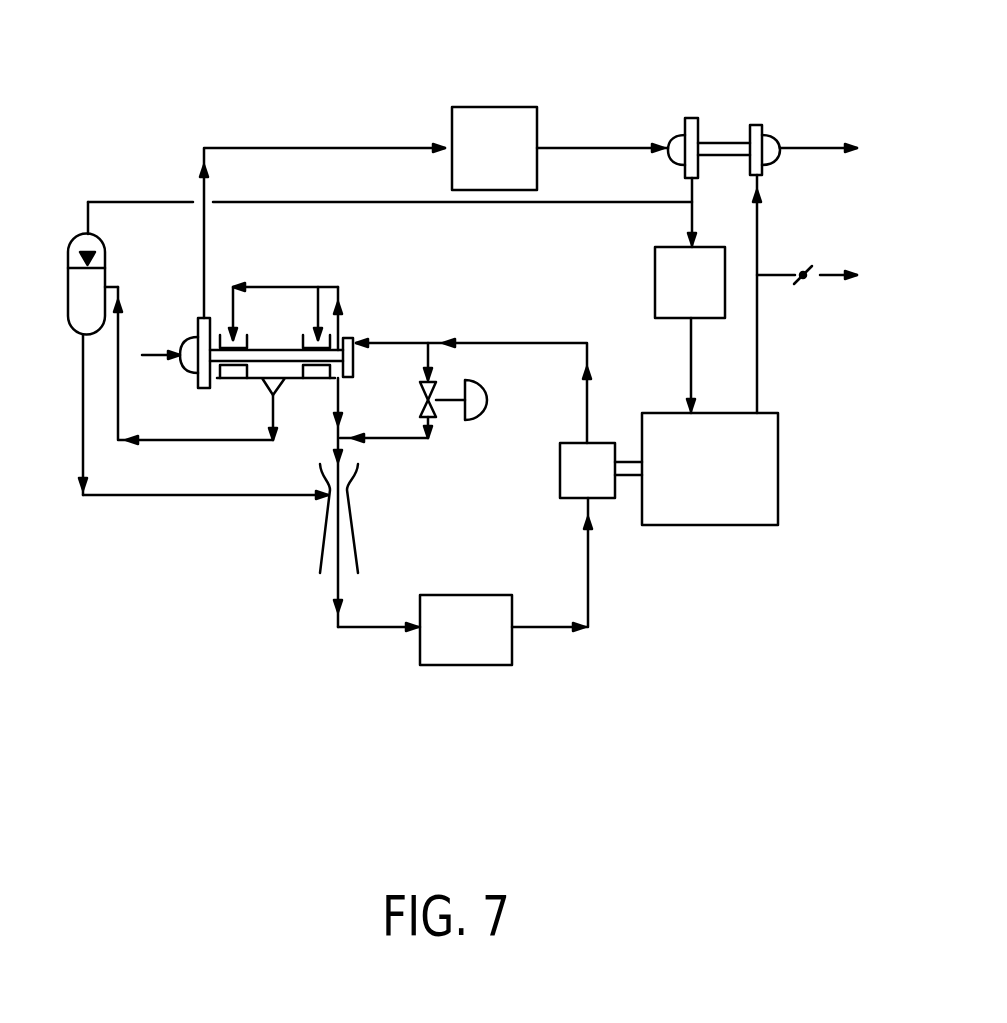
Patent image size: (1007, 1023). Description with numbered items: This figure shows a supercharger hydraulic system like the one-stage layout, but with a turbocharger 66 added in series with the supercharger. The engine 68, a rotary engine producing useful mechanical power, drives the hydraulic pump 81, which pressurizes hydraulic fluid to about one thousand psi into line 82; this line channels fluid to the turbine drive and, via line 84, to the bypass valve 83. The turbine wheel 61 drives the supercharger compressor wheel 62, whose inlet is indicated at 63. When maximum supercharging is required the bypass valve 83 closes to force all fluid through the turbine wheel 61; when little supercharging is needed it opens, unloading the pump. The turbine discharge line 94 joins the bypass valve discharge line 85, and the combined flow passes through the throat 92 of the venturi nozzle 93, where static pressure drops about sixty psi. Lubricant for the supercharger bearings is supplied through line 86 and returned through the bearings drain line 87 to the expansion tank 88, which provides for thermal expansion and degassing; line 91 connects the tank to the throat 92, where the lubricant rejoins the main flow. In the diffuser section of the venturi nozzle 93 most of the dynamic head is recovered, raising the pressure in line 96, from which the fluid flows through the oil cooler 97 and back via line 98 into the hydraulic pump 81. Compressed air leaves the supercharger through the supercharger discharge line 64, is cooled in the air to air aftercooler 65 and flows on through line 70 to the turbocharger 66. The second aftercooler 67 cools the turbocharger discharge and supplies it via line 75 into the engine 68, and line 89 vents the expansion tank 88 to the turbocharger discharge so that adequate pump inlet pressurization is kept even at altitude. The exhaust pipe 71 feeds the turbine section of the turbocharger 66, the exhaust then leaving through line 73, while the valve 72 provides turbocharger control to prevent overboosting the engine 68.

The turbine wheel 61 is at (352, 340).
The supercharger compressor wheel 62 is at (187, 337).
The compressor inlet line 63 is at (163, 355).
The supercharger discharge line 64 is at (205, 253).
The air to air aftercooler 65 is at (488, 130).
The turbocharger 66 is at (717, 148).
The second aftercooler 67 is at (660, 287).
The engine 68 is at (748, 502).
The line 70 is at (582, 148).
The exhaust pipe 71 is at (757, 325).
The valve 72 is at (808, 263).
The line 73 is at (802, 148).
The line 75 is at (683, 337).
The hydraulic pump 81 is at (558, 472).
The line 82 is at (517, 341).
The bypass valve 83 is at (433, 407).
The line 84 is at (428, 353).
The bypass valve discharge line 85 is at (390, 438).
The line 86 is at (297, 287).
The bearings drain line 87 is at (175, 440).
The expansion tank 88 is at (56, 415).
The line 89 is at (98, 202).
The line 91 is at (203, 497).
The throat 92 is at (347, 493).
The venturi nozzle 93 is at (320, 543).
The turbine discharge line 94 is at (347, 338).
The line 96 is at (373, 632).
The oil cooler 97 is at (497, 640).
The line 98 is at (588, 598).